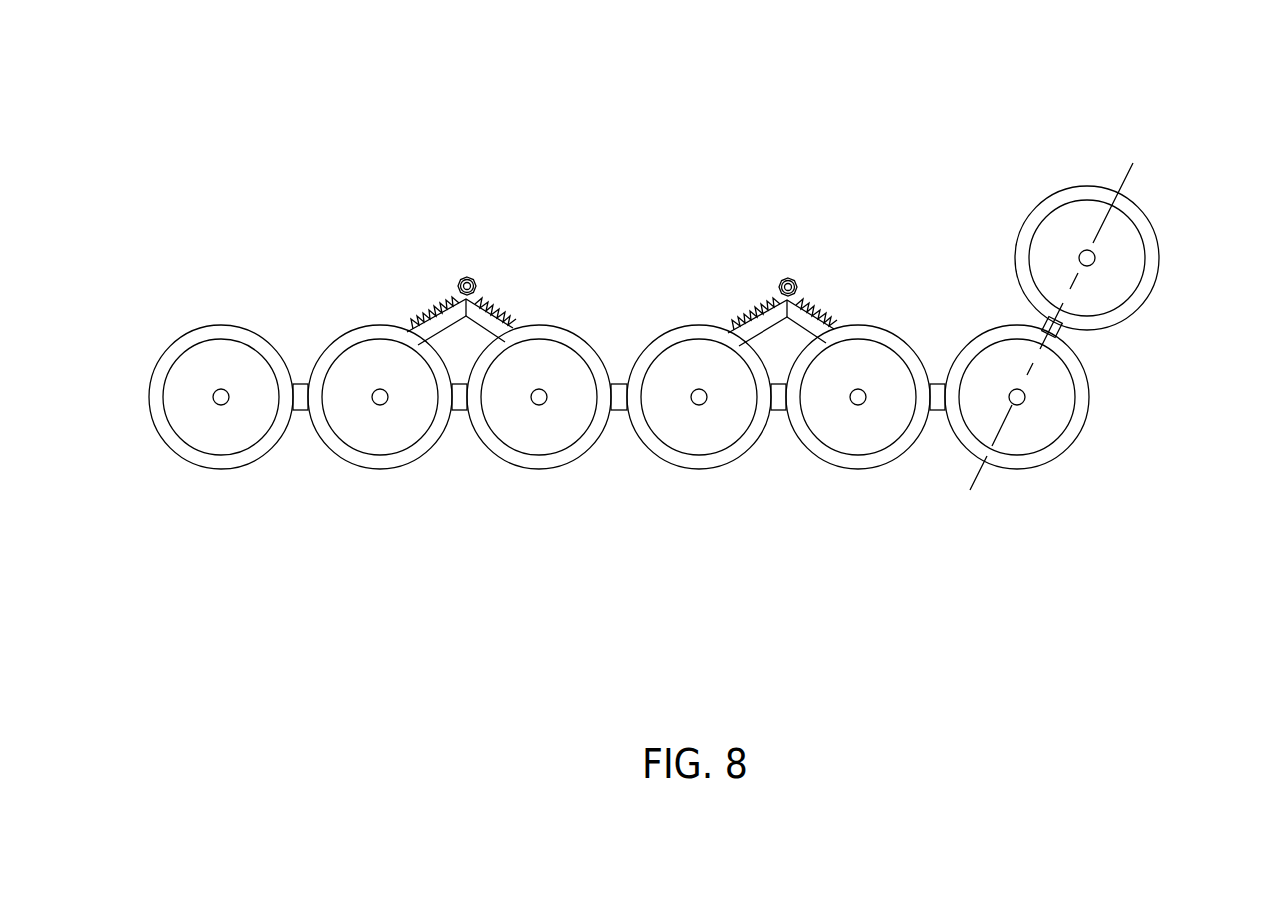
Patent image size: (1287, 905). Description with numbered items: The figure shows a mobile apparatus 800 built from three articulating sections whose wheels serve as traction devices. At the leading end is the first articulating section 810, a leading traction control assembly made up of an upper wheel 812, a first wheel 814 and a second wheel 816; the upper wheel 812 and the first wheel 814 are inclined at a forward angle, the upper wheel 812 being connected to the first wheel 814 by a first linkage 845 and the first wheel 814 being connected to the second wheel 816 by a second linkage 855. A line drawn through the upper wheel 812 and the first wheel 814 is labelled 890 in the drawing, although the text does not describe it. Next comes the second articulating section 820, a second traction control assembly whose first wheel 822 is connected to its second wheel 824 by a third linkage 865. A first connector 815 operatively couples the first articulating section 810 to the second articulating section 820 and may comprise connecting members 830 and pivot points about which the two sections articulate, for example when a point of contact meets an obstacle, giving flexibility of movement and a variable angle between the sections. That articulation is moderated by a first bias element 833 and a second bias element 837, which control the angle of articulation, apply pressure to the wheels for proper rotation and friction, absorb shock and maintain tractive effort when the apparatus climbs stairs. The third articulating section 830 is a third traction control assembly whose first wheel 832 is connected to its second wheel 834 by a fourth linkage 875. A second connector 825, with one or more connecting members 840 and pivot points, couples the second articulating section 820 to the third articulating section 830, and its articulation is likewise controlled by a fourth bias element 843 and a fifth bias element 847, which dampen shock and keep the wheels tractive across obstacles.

The mobile apparatus 800 is at (288, 112).
The first articulating section 810 is at (1000, 302).
The upper wheel 812 is at (1160, 256).
The first wheel 814 is at (1090, 414).
The first connector 815 is at (786, 262).
The second wheel 816 is at (865, 470).
The second articulating section 820 is at (612, 325).
The first wheel 822 is at (706, 470).
The second wheel 824 is at (546, 470).
The second connector 825 is at (464, 262).
The third articulating section 830 is at (298, 305).
The first wheel 832 is at (382, 470).
The first bias element 833 is at (824, 302).
The second wheel 834 is at (195, 462).
The second bias element 837 is at (741, 313).
The connecting member 840 is at (472, 281).
The fourth bias element 843 is at (502, 300).
The first linkage 845 is at (1068, 340).
The fifth bias element 847 is at (414, 313).
The second linkage 855 is at (940, 413).
The third linkage 865 is at (623, 413).
The fourth linkage 875 is at (301, 413).
The axis line 890 is at (1130, 163).